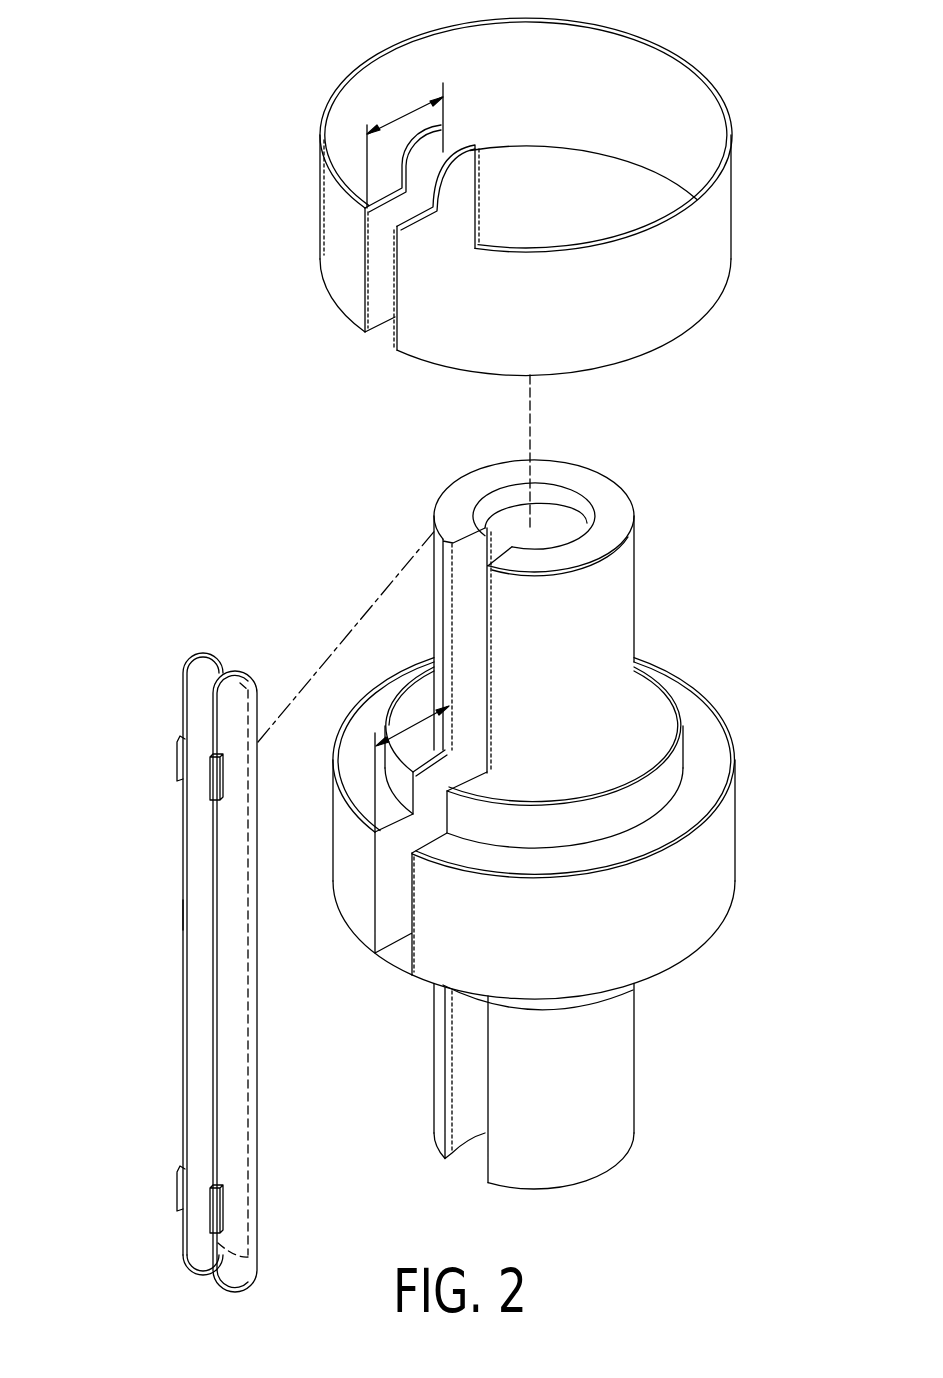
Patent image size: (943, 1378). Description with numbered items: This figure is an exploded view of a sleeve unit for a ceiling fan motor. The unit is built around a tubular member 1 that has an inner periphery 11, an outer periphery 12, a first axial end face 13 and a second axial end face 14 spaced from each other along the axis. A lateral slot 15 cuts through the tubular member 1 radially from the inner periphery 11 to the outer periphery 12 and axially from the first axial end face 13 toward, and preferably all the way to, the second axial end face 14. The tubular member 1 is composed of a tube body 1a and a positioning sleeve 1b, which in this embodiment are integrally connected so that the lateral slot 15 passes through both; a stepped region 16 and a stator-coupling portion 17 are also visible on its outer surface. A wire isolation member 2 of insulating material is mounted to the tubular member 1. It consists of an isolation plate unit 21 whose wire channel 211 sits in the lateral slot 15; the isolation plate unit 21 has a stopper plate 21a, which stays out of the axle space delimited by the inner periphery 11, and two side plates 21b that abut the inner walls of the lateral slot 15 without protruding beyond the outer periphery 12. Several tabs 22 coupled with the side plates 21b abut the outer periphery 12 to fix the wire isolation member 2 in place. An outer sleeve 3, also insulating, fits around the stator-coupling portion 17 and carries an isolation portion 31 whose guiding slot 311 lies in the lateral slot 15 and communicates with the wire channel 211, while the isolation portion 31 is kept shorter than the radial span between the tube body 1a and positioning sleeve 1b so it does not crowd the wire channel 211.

The tubular member 1 is at (823, 995).
The tube body 1a is at (604, 1025).
The positioning sleeve 1b is at (714, 962).
The inner periphery 11 is at (584, 534).
The outer periphery 12 is at (624, 576).
The first axial end face 13 is at (580, 478).
The second axial end face 14 is at (566, 1188).
The lateral slot 15 is at (473, 587).
The step portion 16 is at (676, 780).
The stator-coupling portion 17 is at (708, 890).
The wire isolation member 2 is at (181, 968).
The isolation plate unit 21 is at (80, 1017).
The stopper plate 21a is at (220, 1047).
The side plates 21b is at (183, 1032).
The wire channel 211 is at (205, 912).
The tabs 22 is at (178, 736).
The outer sleeve 3 is at (742, 92).
The isolation portion 31 is at (424, 163).
The guiding slot 311 is at (384, 250).